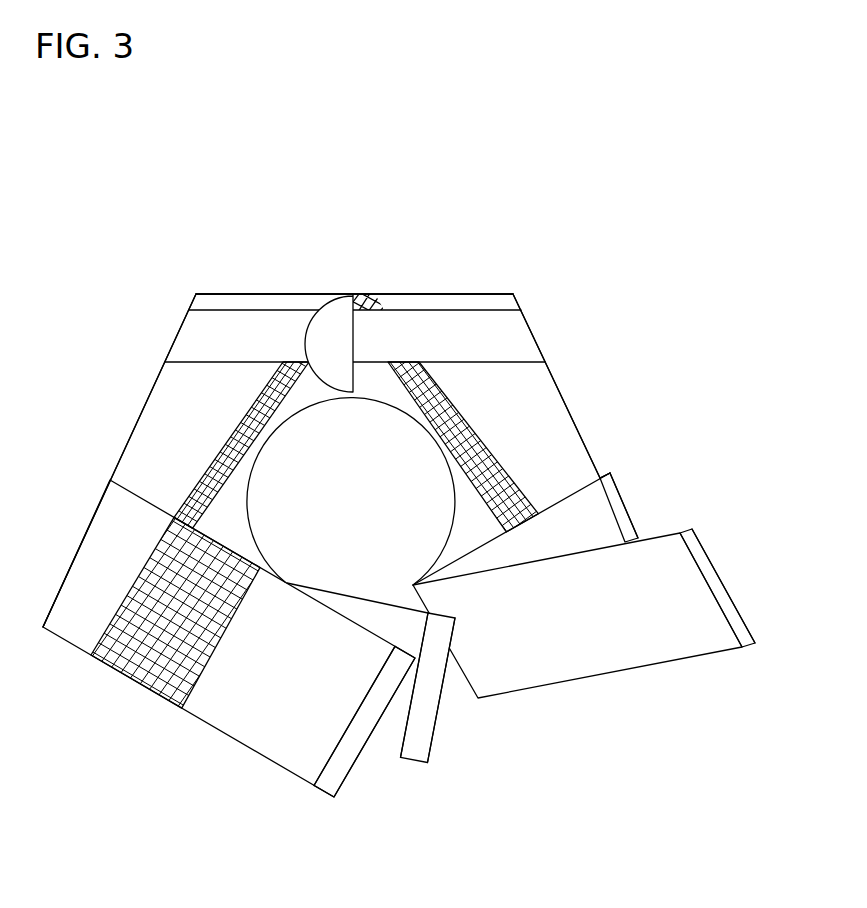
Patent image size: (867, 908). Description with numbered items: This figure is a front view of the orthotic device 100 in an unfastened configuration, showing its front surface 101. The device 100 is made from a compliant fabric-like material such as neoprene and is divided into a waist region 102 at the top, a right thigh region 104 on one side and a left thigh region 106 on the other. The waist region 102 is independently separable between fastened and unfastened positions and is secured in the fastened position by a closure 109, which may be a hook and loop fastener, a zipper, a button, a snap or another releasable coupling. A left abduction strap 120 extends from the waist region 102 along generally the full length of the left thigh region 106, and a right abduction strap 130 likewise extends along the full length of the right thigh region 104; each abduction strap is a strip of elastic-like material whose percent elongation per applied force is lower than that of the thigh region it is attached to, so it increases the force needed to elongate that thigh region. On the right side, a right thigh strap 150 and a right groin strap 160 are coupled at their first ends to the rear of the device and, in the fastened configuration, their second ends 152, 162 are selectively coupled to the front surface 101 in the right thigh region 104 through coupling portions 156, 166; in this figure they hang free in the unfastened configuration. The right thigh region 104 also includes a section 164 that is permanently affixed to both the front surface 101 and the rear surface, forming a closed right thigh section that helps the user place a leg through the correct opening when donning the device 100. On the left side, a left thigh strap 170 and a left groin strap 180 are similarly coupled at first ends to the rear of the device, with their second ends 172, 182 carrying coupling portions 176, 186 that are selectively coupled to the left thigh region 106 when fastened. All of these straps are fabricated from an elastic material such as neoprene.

The orthotic device 100 is at (552, 266).
The front surface 101 is at (280, 290).
The waist region 102 is at (430, 304).
The right thigh region 104 is at (148, 381).
The left thigh region 106 is at (567, 370).
The closure 109 is at (333, 316).
The left abduction strap 120 is at (476, 437).
The right abduction strap 130 is at (236, 458).
The right thigh strap 150 is at (387, 747).
The second end of right thigh strap 152 is at (437, 712).
The coupling portion of right thigh strap 156 is at (422, 727).
The right groin strap 160 is at (247, 732).
The second end of right groin strap 162 is at (345, 780).
The section 164 is at (133, 672).
The coupling portion of right groin strap 166 is at (328, 777).
The left thigh strap 170 is at (592, 660).
The second end of left thigh strap 172 is at (728, 592).
The coupling portion of left thigh strap 176 is at (740, 627).
The left groin strap 180 is at (585, 511).
The second end of left groin strap 182 is at (611, 474).
The coupling portion of left groin strap 186 is at (622, 523).